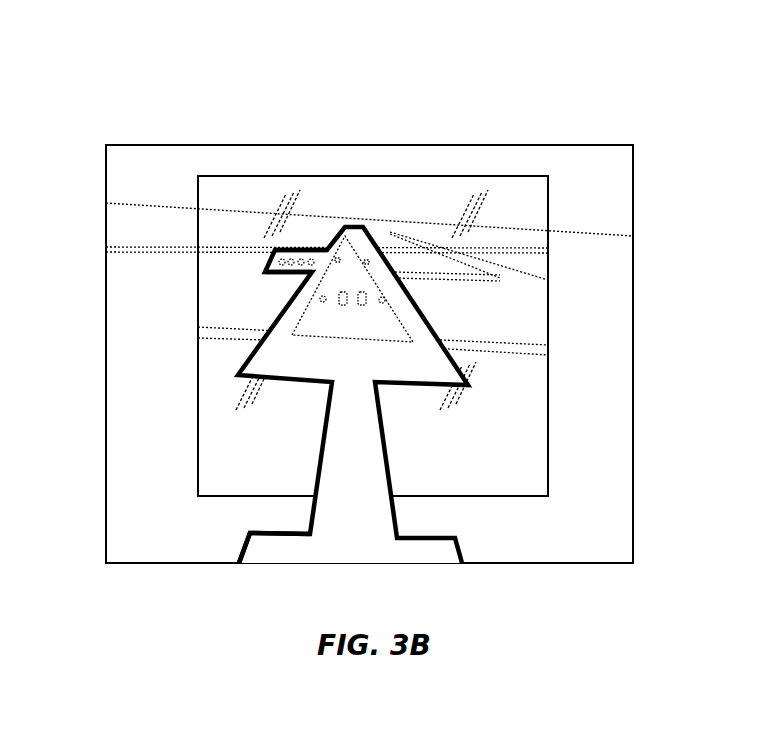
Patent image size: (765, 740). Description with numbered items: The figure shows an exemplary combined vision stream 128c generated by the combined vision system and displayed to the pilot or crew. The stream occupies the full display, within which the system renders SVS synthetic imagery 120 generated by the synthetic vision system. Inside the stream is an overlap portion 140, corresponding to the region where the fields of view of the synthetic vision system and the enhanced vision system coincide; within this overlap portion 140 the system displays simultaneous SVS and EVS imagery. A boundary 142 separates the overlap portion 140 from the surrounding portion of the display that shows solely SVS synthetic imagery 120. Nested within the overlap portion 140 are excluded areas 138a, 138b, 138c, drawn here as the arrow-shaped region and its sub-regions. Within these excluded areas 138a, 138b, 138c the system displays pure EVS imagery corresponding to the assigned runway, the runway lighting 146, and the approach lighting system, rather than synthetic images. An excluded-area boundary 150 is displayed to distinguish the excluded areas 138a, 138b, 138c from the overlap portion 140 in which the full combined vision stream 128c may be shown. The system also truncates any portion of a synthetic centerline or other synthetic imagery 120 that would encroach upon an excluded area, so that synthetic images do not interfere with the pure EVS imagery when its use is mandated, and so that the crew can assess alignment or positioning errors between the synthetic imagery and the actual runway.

The combined vision stream 128c is at (82, 83).
The SVS synthetic imagery 120 is at (132, 177).
The overlap portion 140 is at (463, 192).
The boundary 142 is at (548, 195).
The excluded area 138a is at (388, 472).
The excluded area 138b is at (417, 310).
The excluded area 138c is at (300, 250).
The runway lighting 146 is at (265, 262).
The excluded-area boundary 150 is at (235, 547).